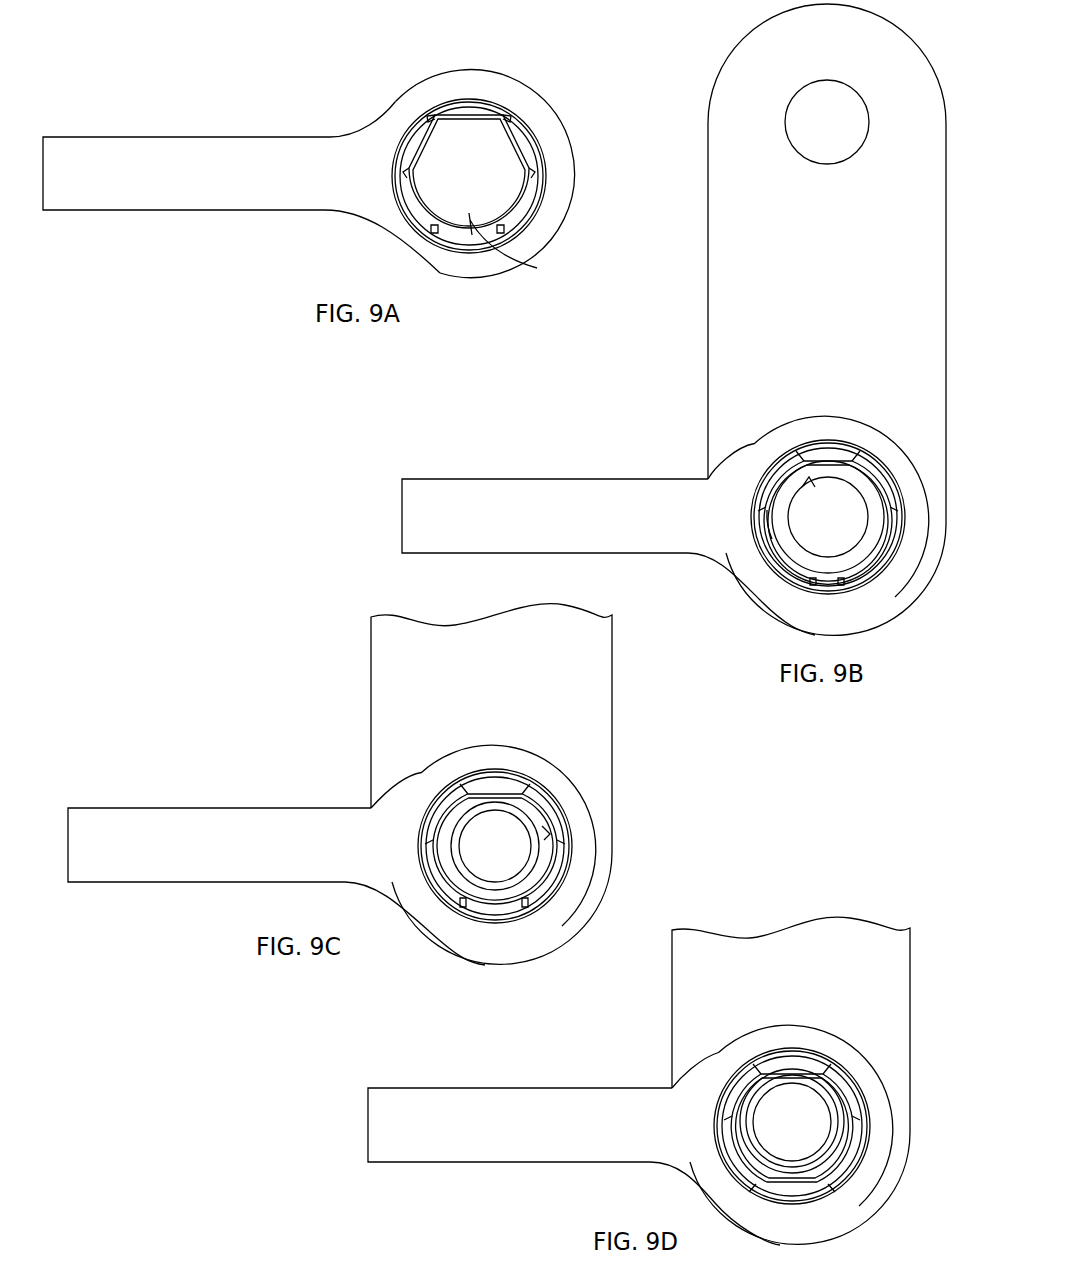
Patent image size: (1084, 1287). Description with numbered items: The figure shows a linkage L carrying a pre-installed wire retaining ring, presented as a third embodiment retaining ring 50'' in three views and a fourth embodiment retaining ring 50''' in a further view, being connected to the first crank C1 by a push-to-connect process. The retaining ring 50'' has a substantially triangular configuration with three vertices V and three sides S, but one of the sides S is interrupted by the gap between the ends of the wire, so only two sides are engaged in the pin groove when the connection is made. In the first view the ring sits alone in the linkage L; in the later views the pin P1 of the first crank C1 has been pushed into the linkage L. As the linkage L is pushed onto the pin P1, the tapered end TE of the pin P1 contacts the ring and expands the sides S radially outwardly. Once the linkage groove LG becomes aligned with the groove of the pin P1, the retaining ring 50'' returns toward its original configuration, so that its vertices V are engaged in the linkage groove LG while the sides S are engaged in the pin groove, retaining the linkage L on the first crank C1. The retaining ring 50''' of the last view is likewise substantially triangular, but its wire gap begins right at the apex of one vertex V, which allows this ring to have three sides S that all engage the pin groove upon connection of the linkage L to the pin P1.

In FIG. 9A, the lever L is at (228, 148).
In FIG. 9B, the lever L is at (512, 492).
In FIG. 9C, the lever L is at (200, 825).
In FIG. 9D, the lever L is at (545, 1108).
In FIG. 9B, the first crank C1 is at (745, 262).
In FIG. 9C, the first crank C1 is at (397, 674).
In FIG. 9D, the first crank C1 is at (715, 953).
In FIG. 9A, the retaining ring 50'' is at (473, 148).
In FIG. 9B, the retaining ring 50'' is at (865, 530).
In FIG. 9C, the retaining ring 50'' is at (519, 881).
In FIG. 9D, the retaining ring 50''' is at (776, 1098).
In FIG. 9A, the vertices V is at (476, 146).
In FIG. 9B, the vertices V is at (809, 480).
In FIG. 9C, the vertices V is at (501, 812).
In FIG. 9D, the vertices V is at (796, 1107).
In FIG. 9A, the sides S is at (473, 130).
In FIG. 9B, the sides S is at (820, 453).
In FIG. 9C, the sides S is at (518, 793).
In FIG. 9D, the sides S is at (812, 1148).
In FIG. 9B, the linkage groove LG is at (791, 430).
In FIG. 9C, the linkage groove LG is at (563, 773).
In FIG. 9B, the tapered end TE is at (738, 521).
In FIG. 9B, the pin P1 is at (844, 547).
In FIG. 9C, the pin P1 is at (478, 798).
In FIG. 9D, the pin P1 is at (792, 1121).